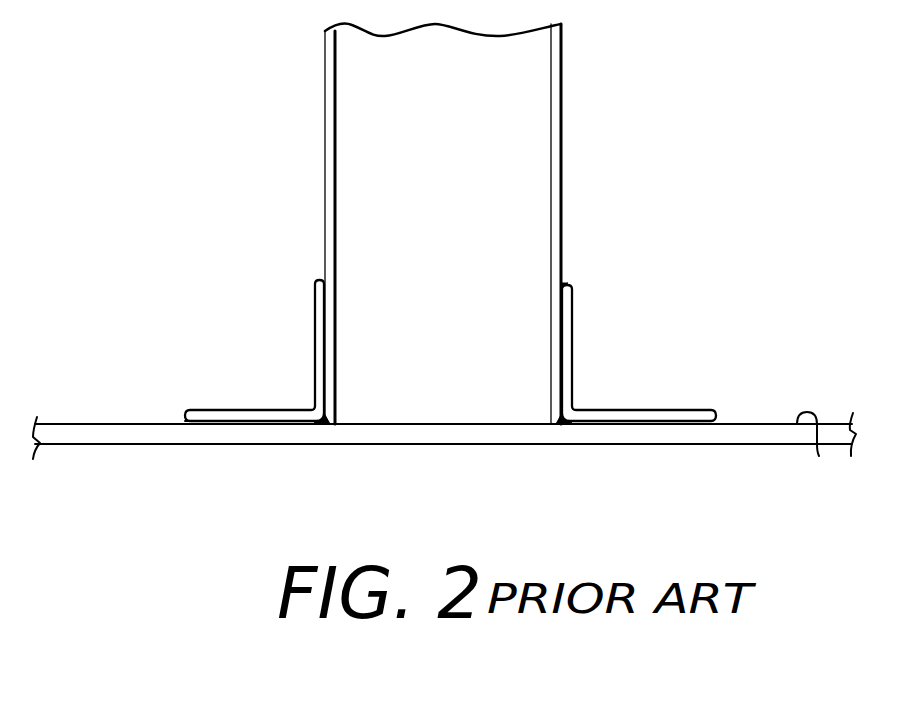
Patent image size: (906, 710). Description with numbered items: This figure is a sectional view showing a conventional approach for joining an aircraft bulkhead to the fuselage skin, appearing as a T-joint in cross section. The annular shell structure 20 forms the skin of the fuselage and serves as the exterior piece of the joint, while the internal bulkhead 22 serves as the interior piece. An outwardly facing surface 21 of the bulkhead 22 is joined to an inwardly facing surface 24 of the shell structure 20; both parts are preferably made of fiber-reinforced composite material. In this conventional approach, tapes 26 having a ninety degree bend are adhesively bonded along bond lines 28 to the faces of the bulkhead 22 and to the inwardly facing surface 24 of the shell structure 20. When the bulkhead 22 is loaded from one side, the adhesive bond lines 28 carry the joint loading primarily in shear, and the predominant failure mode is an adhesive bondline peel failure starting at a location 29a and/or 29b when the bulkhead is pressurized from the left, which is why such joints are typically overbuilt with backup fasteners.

The annular shell structure 20 is at (106, 444).
The outwardly facing surface 21 is at (446, 424).
The internal bulkhead 22 is at (353, 70).
The inwardly facing surface 24 is at (824, 456).
The tape 26 is at (315, 362).
The bond line 28 is at (327, 338).
The peel failure location 29a is at (332, 424).
The peel failure location 29b is at (183, 420).